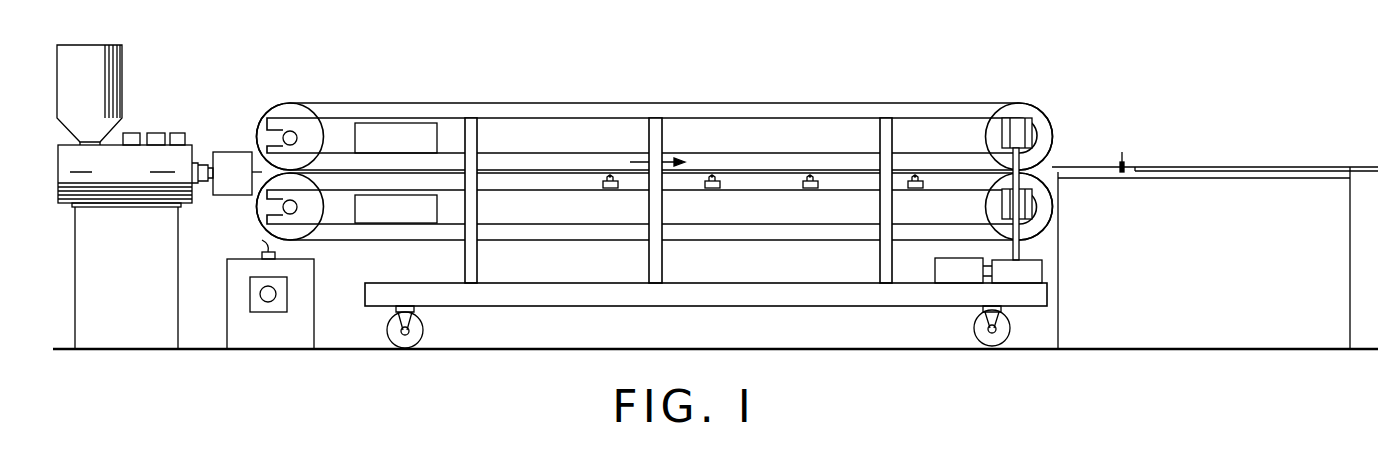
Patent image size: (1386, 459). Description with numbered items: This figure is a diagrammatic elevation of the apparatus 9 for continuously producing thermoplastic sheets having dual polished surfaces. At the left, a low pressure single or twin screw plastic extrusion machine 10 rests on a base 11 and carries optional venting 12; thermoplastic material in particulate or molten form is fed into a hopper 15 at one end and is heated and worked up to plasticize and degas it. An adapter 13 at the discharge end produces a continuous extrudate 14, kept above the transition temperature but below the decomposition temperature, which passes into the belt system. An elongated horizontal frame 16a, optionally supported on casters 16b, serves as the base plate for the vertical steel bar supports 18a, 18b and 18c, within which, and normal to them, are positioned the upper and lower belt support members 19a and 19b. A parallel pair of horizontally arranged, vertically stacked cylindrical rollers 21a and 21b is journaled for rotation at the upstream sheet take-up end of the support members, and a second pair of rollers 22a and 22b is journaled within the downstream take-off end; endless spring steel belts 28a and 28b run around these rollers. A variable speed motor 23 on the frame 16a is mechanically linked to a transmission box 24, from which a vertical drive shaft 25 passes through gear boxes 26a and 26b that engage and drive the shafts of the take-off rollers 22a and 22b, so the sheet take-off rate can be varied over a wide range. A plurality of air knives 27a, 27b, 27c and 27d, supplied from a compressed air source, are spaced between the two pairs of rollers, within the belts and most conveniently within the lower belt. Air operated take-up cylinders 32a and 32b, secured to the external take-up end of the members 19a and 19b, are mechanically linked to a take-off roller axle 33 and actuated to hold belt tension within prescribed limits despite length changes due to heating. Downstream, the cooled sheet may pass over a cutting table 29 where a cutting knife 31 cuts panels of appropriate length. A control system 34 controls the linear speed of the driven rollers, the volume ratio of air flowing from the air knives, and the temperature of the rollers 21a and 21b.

The apparatus 9 is at (850, 80).
The plastic extrusion machine 10 is at (100, 181).
The base 11 is at (101, 279).
The venting 12 is at (177, 133).
The adapter 13 is at (235, 152).
The extrudate 14 is at (252, 196).
The hopper 15 is at (108, 62).
The horizontal frame 16a is at (537, 286).
The casters 16b is at (423, 328).
The vertical steel bar support 18a is at (465, 250).
The vertical steel bar support 18b is at (649, 250).
The vertical steel bar support 18c is at (882, 248).
The upper belt support member 19a is at (541, 149).
The lower belt support member 19b is at (504, 221).
The cylindrical roller 21a is at (272, 114).
The cylindrical roller 21b is at (262, 222).
The take-off roller 22a is at (1025, 110).
The take-off roller 22b is at (1052, 196).
The variable speed motor 23 is at (943, 265).
The transmission box 24 is at (1005, 262).
The drive shaft 25 is at (1019, 256).
The gear box 26a is at (1002, 137).
The gear box 26b is at (1002, 205).
The air knife 27a is at (618, 185).
The air knife 27b is at (713, 188).
The air knife 27c is at (812, 188).
The air knife 27d is at (916, 188).
The endless spring steel belt 28a is at (335, 103).
The endless spring steel belt 28b is at (324, 241).
The cutting table 29 is at (1350, 293).
The cutting knife 31 is at (1121, 160).
The air operated take up cylinder 32a is at (380, 147).
The air operated take up cylinder 32b is at (380, 218).
The take-off roller axle 33 is at (296, 138).
The control system 34 is at (274, 338).